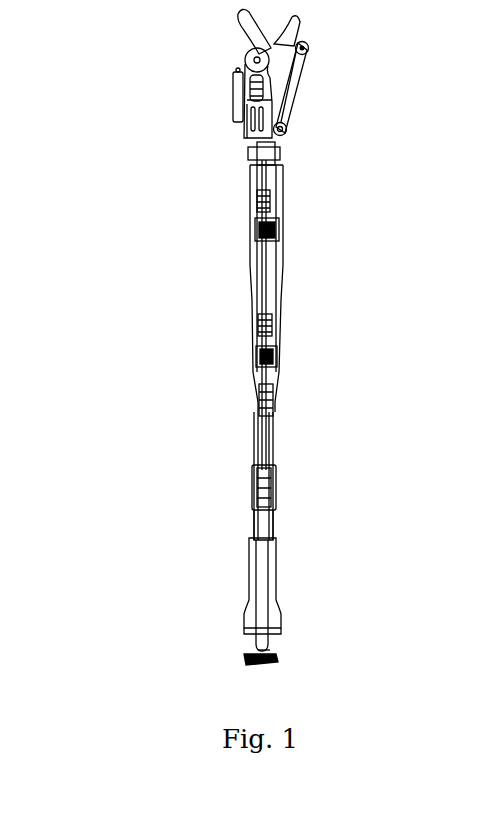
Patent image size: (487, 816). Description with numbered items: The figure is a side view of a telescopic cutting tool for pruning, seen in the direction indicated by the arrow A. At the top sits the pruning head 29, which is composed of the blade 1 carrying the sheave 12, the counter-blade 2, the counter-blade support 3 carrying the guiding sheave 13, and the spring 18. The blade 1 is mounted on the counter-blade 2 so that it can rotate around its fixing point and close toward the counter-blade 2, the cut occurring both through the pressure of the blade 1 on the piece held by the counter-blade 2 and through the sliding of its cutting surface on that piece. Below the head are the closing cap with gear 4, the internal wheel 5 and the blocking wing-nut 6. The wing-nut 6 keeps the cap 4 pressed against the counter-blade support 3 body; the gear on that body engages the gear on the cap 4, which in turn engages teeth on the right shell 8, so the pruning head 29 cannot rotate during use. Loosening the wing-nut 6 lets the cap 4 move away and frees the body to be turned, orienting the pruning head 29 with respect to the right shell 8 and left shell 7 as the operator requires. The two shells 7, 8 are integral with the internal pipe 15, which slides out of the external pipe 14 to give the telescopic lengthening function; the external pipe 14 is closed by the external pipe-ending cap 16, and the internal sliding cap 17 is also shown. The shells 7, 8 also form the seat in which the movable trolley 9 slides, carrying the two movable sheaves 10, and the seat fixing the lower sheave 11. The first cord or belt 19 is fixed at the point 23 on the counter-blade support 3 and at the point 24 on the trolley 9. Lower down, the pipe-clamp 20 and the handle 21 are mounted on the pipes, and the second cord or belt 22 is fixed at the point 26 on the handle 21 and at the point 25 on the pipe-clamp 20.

The blade 1 is at (238, 14).
The counter-blade 2 is at (297, 22).
The counter-blade support 3 is at (244, 139).
The closing cap with gear 4 is at (257, 177).
The internal wheel 5 is at (272, 167).
The blocking wing-nut 6 is at (246, 152).
The left shell 7 is at (250, 270).
The right shell 8 is at (281, 282).
The trolley 9 is at (273, 224).
The movable sheaves 10 is at (273, 232).
The lower sheave 11 is at (272, 357).
The sheave 12 is at (306, 48).
The guiding sheave 13 is at (283, 128).
The external pipe 14 is at (272, 523).
The internal pipe 15 is at (253, 443).
The external pipe-ending cap 16 is at (250, 660).
The internal sliding cap 17 is at (270, 652).
The spring 18 is at (236, 91).
The first cord or belt 19 is at (302, 68).
The pipe-clamp 20 is at (250, 490).
The handle 21 is at (248, 547).
The second cord or belt 22 is at (265, 600).
The fixing point on counter-blade support 23 is at (258, 108).
The fixing point on trolley 24 is at (254, 216).
The fixing point on pipe-clamp 25 is at (273, 470).
The fixing point on handle 26 is at (247, 633).
The pruning head 29 is at (96, 80).
The viewing direction A is at (407, 350).